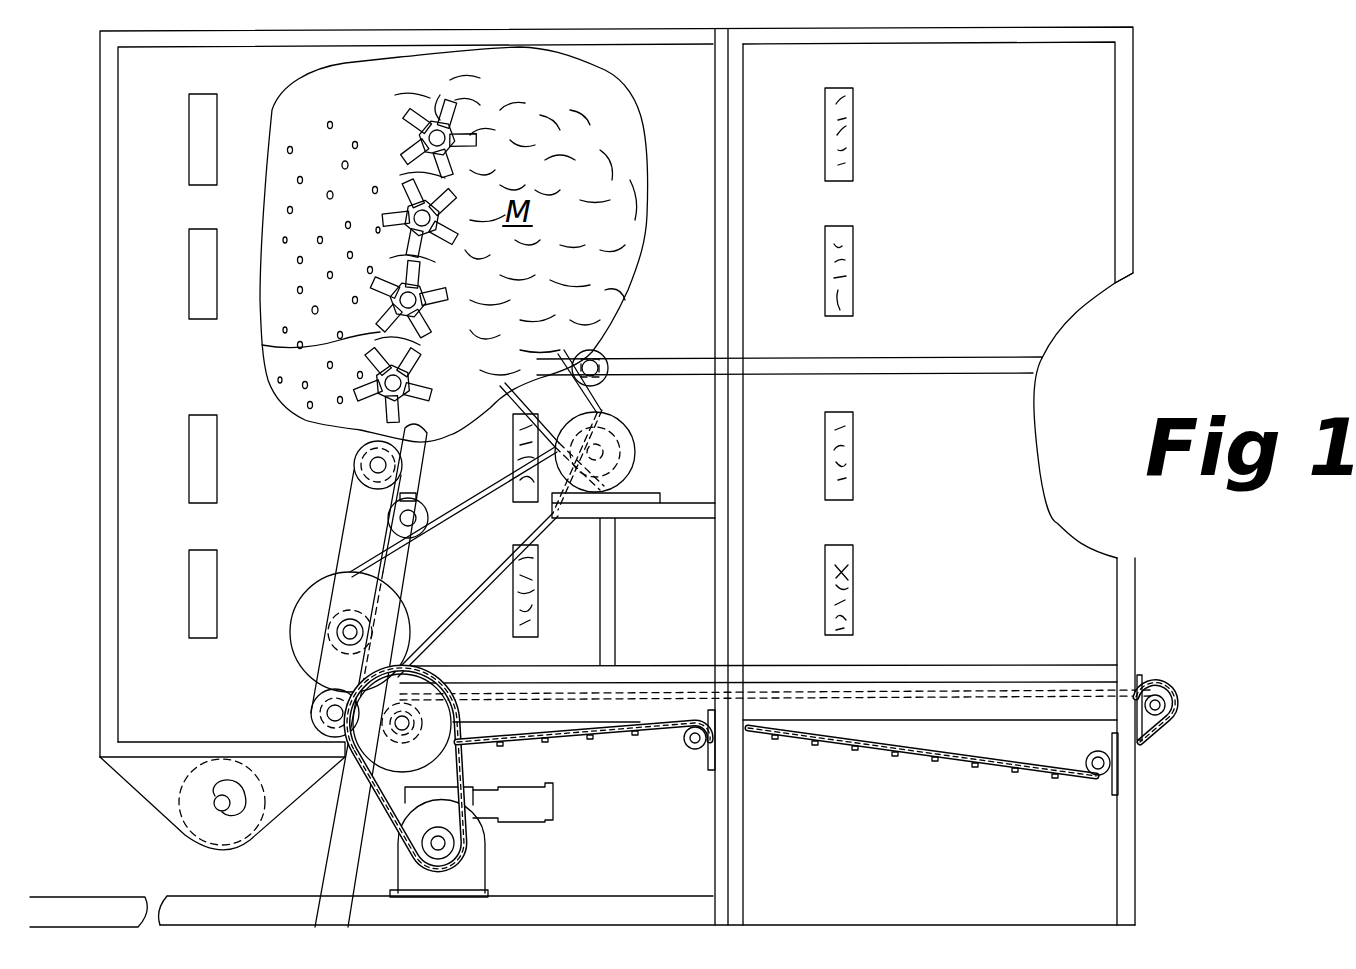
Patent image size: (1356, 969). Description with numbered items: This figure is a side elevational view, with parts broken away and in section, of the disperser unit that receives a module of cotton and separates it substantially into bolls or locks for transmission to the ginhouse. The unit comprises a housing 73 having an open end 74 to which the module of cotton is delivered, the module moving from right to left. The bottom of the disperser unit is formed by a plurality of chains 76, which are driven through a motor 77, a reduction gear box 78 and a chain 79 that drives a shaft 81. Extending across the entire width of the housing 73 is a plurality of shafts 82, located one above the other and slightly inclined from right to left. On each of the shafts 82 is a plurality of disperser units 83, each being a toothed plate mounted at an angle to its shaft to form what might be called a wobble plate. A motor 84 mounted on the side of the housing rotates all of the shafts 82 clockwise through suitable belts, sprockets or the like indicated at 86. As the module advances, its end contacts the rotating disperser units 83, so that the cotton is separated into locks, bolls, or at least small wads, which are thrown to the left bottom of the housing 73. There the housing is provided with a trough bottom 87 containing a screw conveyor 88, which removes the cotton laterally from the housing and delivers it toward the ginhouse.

The housing 73 is at (1090, 157).
The open end 74 is at (1087, 390).
The chains 76 is at (1022, 775).
The motor 77 is at (522, 812).
The reduction gear box 78 is at (468, 870).
The chain 79 is at (457, 758).
The shaft 81 is at (402, 722).
The shafts 82 is at (428, 124).
The disperser units 83 is at (264, 347).
The motor 84 is at (633, 447).
The belts, sprockets or the like 86 is at (594, 410).
The trough bottom 87 is at (145, 768).
The screw conveyor 88 is at (180, 805).